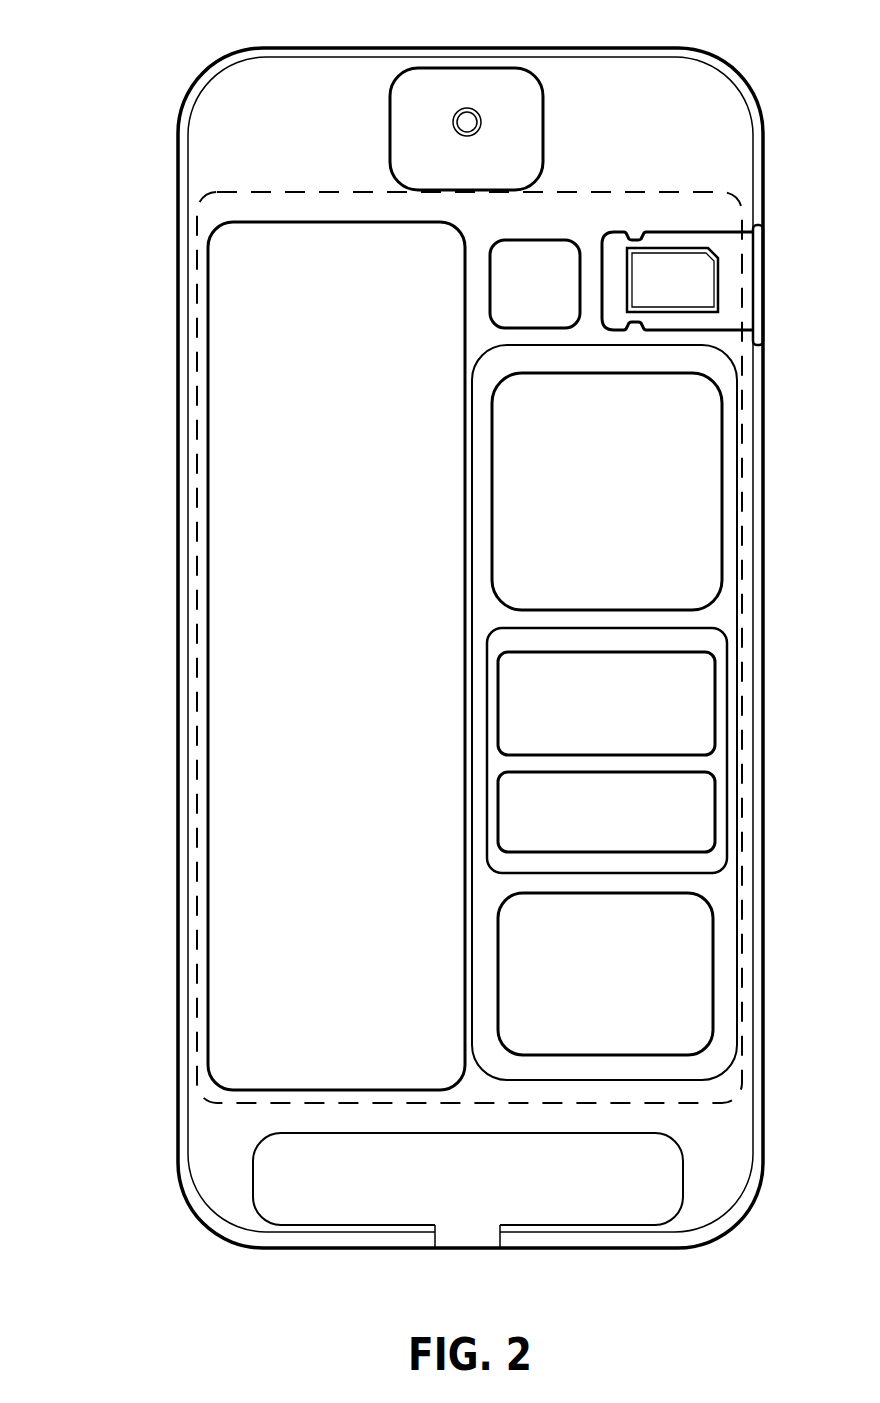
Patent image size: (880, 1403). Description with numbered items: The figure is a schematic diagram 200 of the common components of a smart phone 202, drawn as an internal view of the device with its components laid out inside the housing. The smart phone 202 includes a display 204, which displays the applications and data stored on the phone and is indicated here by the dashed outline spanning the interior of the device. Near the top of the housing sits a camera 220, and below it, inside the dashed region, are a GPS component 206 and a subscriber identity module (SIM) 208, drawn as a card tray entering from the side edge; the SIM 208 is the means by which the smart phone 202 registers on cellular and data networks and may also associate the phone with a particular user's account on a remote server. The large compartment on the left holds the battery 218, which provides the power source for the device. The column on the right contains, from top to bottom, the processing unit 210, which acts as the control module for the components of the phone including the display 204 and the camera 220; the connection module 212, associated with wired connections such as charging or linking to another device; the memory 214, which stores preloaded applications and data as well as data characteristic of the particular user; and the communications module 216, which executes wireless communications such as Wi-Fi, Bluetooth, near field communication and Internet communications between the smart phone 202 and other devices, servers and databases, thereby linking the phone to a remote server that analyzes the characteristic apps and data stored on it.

The schematic diagram 200 is at (108, 57).
The smart phone 202 is at (178, 260).
The display 204 is at (197, 363).
The GPS component 206 is at (562, 240).
The subscriber identity module (SIM) 208 is at (650, 232).
The processing unit 210 is at (626, 507).
The connection module 212 is at (626, 714).
The memory 214 is at (626, 822).
The communications module 216 is at (626, 989).
The battery 218 is at (358, 668).
The camera 220 is at (389, 108).